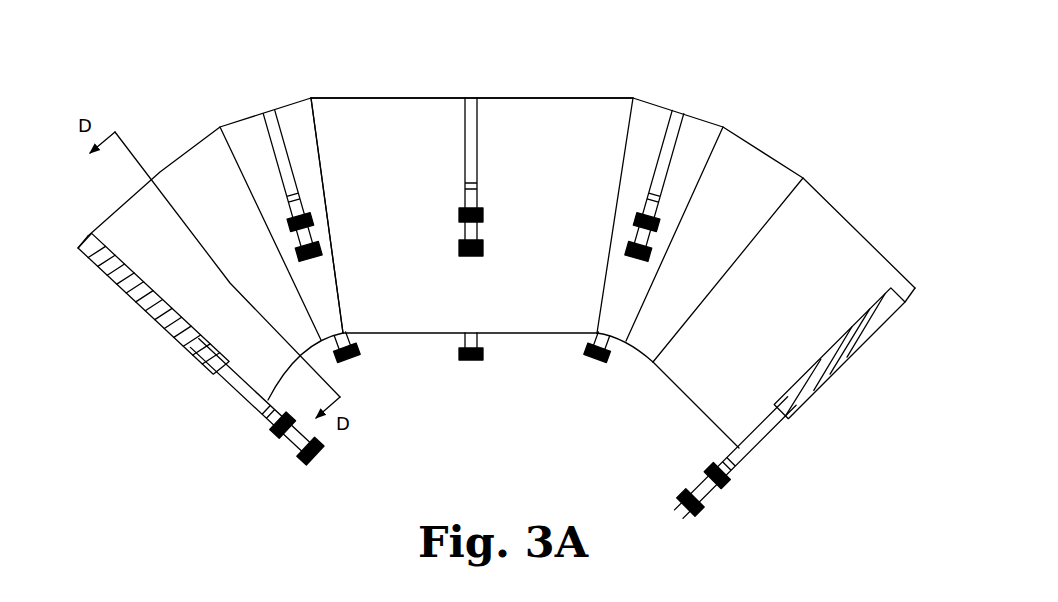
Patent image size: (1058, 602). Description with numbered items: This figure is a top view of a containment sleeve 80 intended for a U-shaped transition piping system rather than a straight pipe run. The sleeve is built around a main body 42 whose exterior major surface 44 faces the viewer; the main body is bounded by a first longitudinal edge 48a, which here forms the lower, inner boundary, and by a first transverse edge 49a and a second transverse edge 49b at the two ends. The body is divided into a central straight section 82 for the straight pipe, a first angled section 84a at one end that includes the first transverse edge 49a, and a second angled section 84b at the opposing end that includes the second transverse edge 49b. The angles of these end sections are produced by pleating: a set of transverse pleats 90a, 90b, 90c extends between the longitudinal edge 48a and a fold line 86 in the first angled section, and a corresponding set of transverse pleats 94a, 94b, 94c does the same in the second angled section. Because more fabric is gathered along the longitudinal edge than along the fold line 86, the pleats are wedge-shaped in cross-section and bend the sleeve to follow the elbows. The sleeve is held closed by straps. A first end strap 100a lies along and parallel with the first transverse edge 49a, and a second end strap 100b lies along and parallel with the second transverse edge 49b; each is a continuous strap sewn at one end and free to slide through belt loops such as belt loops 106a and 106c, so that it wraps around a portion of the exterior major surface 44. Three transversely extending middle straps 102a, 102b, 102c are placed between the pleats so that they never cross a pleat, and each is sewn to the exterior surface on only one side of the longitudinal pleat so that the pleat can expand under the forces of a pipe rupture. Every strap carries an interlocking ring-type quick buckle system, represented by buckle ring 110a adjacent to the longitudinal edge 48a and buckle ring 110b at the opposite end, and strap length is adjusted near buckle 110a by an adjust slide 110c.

The containment sleeve 80 is at (784, 94).
The central straight section 82 is at (508, 65).
The first angled section 84a is at (165, 95).
The second angled section 84b is at (863, 164).
The fold line 86 is at (340, 98).
The exterior major surface 44 is at (558, 120).
The main body 42 is at (431, 96).
The first longitudinal edge 48a is at (538, 335).
The first transverse edge 49a is at (80, 258).
The second transverse edge 49b is at (908, 310).
The transverse pleat 90a is at (180, 222).
The transverse pleat 90b is at (243, 180).
The transverse pleat 90c is at (323, 145).
The transverse pleat 94a is at (765, 225).
The transverse pleat 94b is at (700, 180).
The transverse pleat 94c is at (625, 147).
The first end strap 100a is at (240, 385).
The second end strap 100b is at (770, 440).
The middle strap 102a is at (268, 112).
The middle strap 102b is at (470, 98).
The middle strap 102c is at (680, 112).
The belt loop 106a is at (160, 330).
The belt loop 106c is at (836, 375).
The buckle ring 110a is at (323, 255).
The buckle ring 110b is at (346, 360).
The adjust slide 110c is at (313, 222).